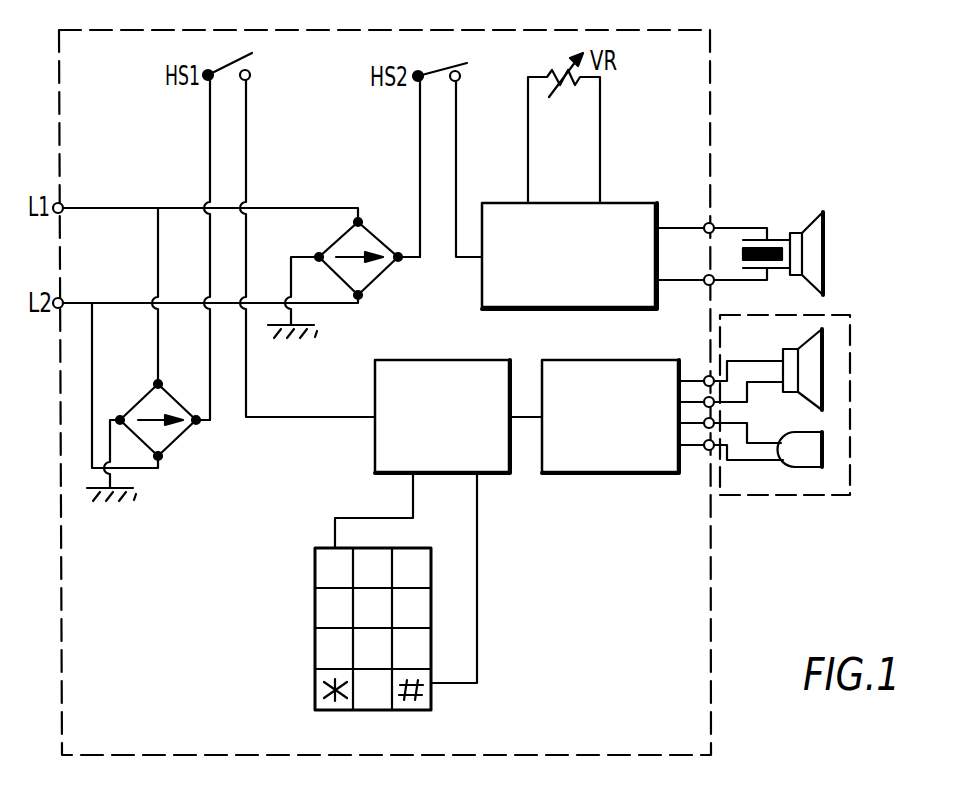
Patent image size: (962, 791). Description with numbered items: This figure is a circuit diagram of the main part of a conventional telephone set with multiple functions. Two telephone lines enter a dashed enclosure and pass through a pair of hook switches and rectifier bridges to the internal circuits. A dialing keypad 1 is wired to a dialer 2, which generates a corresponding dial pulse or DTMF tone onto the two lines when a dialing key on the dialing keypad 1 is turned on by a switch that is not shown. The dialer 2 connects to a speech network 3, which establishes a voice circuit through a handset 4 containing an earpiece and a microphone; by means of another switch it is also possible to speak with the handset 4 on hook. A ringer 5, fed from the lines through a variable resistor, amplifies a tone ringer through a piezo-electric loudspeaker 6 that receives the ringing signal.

The dialing keypad 1 is at (315, 603).
The dialer 2 is at (375, 452).
The speech network 3 is at (607, 473).
The handset 4 is at (757, 497).
The ringer 5 is at (627, 203).
The piezo-electric loudspeaker 6 is at (797, 232).